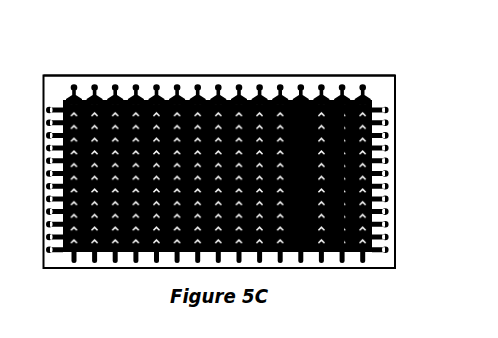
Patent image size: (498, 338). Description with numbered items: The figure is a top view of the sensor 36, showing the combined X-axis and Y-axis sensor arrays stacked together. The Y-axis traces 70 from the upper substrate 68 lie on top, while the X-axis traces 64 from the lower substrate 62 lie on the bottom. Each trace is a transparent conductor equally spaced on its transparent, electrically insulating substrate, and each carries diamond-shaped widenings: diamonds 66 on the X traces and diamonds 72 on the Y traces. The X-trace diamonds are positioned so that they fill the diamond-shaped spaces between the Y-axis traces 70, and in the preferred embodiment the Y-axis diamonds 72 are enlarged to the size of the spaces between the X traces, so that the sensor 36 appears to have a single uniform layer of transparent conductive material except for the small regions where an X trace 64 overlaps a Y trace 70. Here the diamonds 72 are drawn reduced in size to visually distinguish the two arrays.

The sensor 36 is at (243, 131).
The substrate 62 is at (145, 75).
The trace 64 is at (303, 100).
The diamond 66 is at (336, 100).
The substrate 68 is at (145, 75).
The trace 70 is at (393, 118).
The diamond 72 is at (378, 108).